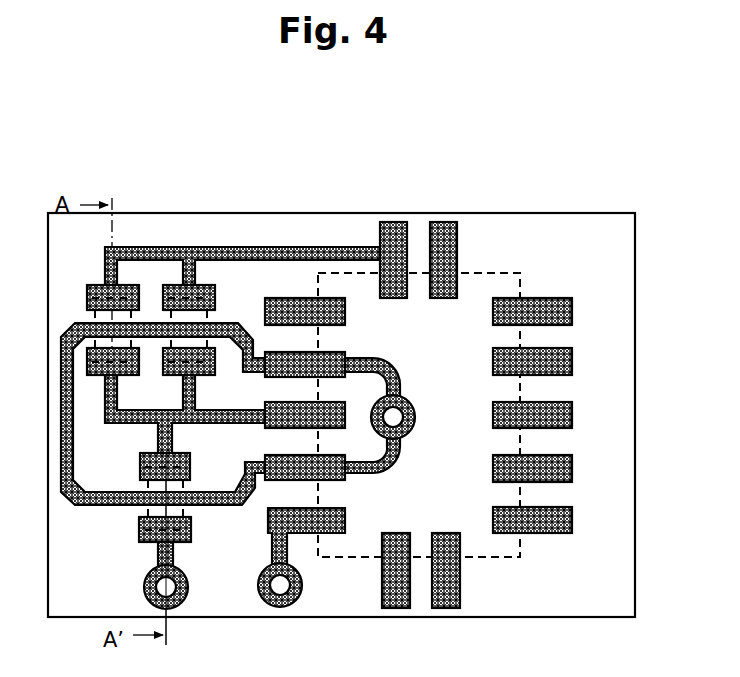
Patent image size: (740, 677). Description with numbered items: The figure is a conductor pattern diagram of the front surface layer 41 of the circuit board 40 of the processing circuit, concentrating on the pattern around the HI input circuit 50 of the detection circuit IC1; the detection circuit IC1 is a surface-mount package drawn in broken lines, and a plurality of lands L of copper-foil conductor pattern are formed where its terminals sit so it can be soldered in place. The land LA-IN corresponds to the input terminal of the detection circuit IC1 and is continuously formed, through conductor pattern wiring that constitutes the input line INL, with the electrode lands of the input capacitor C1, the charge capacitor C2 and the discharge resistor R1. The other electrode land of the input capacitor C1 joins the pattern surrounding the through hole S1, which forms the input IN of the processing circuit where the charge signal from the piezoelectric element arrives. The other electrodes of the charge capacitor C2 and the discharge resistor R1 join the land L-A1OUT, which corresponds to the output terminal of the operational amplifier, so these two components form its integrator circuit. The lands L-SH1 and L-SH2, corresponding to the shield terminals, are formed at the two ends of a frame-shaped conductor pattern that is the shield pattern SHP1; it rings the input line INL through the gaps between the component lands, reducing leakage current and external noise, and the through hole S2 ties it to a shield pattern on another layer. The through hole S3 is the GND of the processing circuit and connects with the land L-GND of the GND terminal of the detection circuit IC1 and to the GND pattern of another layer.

The circuit board 40 is at (551, 212).
The front surface layer 41 is at (600, 274).
The HI input circuit 50 is at (256, 218).
The land L-A1OUT is at (380, 233).
The discharge resistor R1 is at (93, 317).
The charge capacitor C2 is at (205, 319).
The input capacitor C1 is at (143, 485).
The input line INL is at (253, 425).
The land L-AIN LA-IN is at (306, 403).
The shield pattern SHP1 is at (108, 505).
The land L-SH1 is at (338, 352).
The land L-SH2 is at (345, 477).
The through hole S2 is at (397, 413).
The land L-GND is at (345, 520).
The through hole S3 is at (282, 584).
The element GND is at (264, 568).
The input IN is at (146, 587).
The through hole S1 is at (168, 586).
The lands L is at (572, 517).
The detection circuit IC1 is at (520, 558).